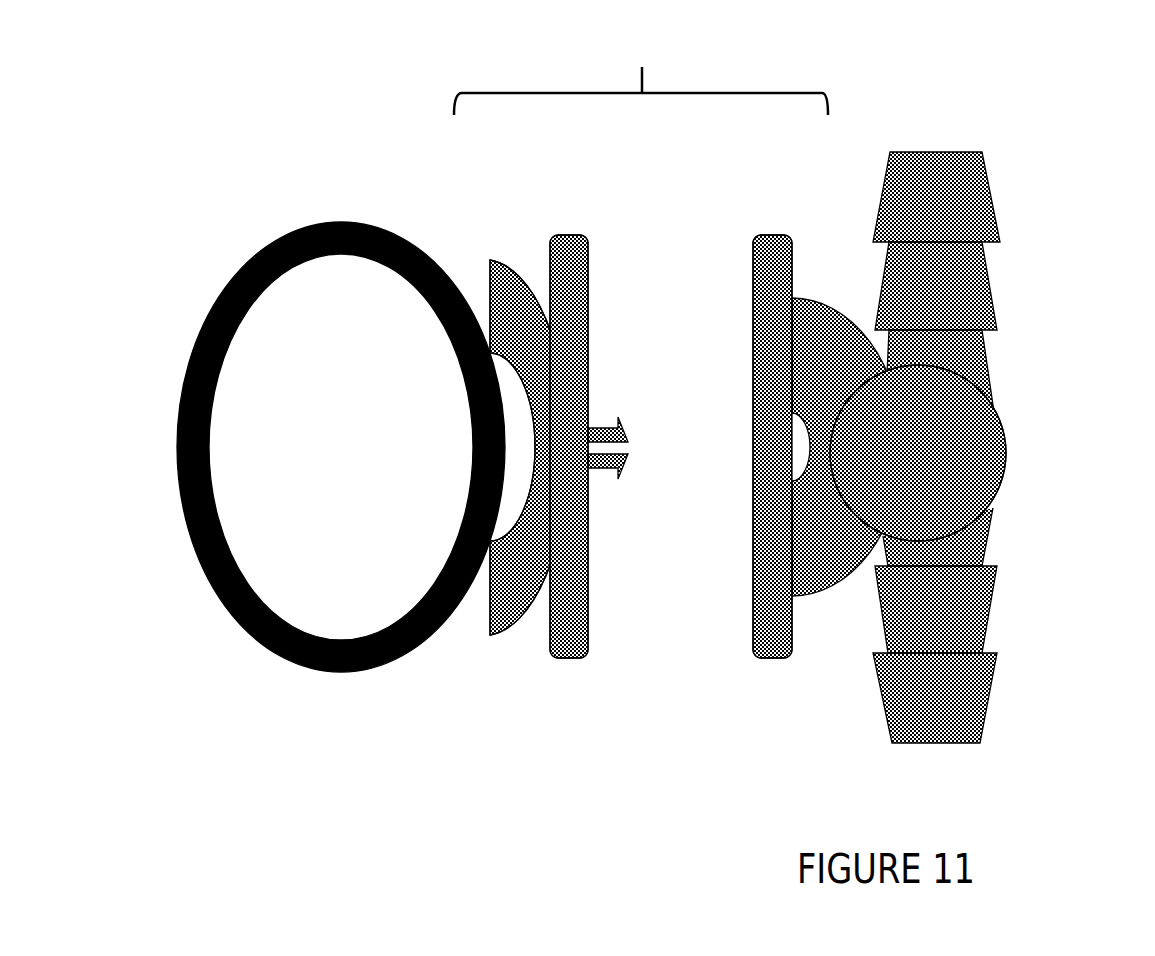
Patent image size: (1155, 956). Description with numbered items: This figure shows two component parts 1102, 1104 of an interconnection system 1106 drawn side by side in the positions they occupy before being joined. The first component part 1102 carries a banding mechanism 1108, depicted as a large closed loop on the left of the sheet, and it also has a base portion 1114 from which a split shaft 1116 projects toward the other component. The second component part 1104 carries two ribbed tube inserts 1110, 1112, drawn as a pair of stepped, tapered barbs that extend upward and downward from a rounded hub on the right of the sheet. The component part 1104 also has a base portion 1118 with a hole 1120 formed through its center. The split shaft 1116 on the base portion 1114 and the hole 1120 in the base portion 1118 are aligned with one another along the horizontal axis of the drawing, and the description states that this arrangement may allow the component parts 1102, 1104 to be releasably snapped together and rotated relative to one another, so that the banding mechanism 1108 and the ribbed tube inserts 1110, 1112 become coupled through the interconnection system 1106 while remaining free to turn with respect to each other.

The component part 1102 is at (558, 502).
The component part 1104 is at (763, 502).
The interconnection system 1106 is at (641, 61).
The banding mechanism 1108 is at (273, 660).
The ribbed tube insert 1110 is at (1027, 229).
The ribbed tube insert 1112 is at (1025, 616).
The base portion 1114 is at (600, 320).
The split shaft 1116 is at (633, 492).
The base portion 1118 is at (743, 563).
The hole 1120 is at (755, 440).